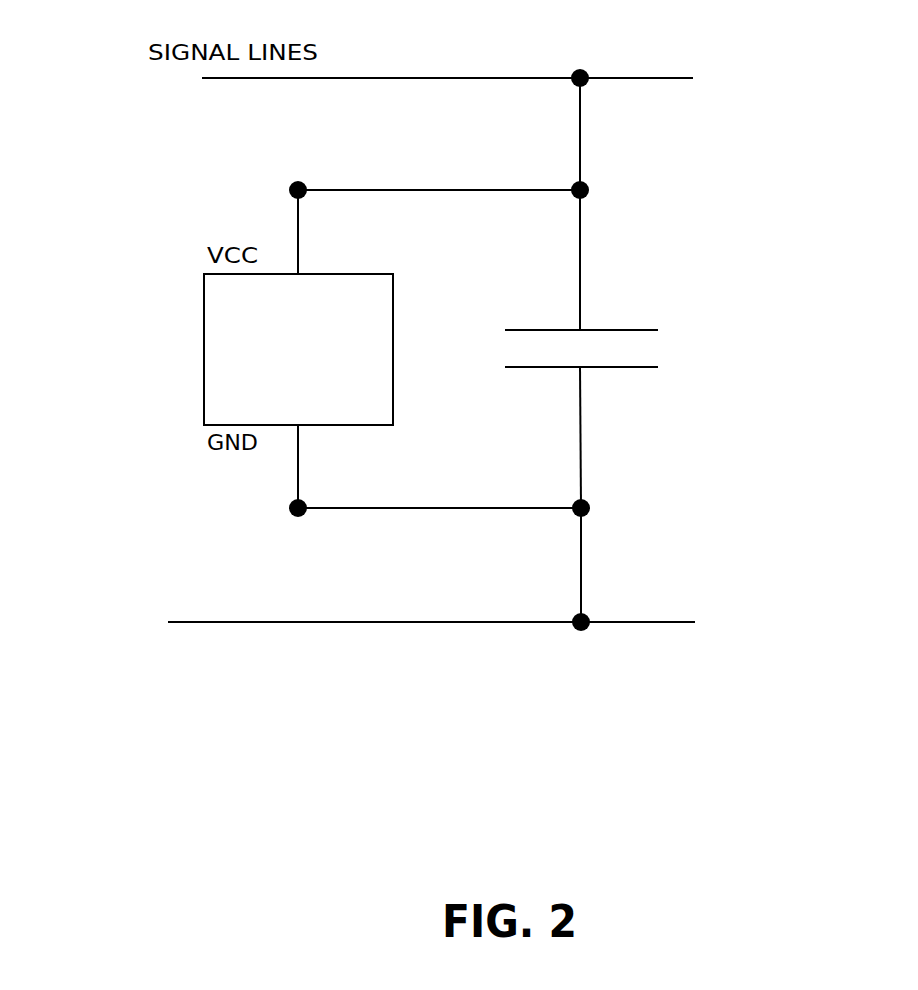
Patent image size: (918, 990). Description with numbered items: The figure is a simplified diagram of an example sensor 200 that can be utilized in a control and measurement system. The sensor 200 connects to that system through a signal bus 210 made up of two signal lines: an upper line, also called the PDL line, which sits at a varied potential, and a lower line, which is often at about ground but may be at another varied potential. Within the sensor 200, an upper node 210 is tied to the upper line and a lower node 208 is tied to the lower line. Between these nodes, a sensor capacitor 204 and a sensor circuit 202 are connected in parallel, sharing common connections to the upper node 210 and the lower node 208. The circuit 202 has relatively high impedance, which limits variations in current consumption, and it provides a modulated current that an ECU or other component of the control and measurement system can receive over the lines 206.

The sensor 200 is at (165, 882).
The sensor circuit 202 is at (318, 389).
The sensor capacitor 204 is at (680, 288).
The signal line (top) 206 is at (538, 48).
The lower node 208 is at (542, 651).
The upper node 210 is at (643, 78).